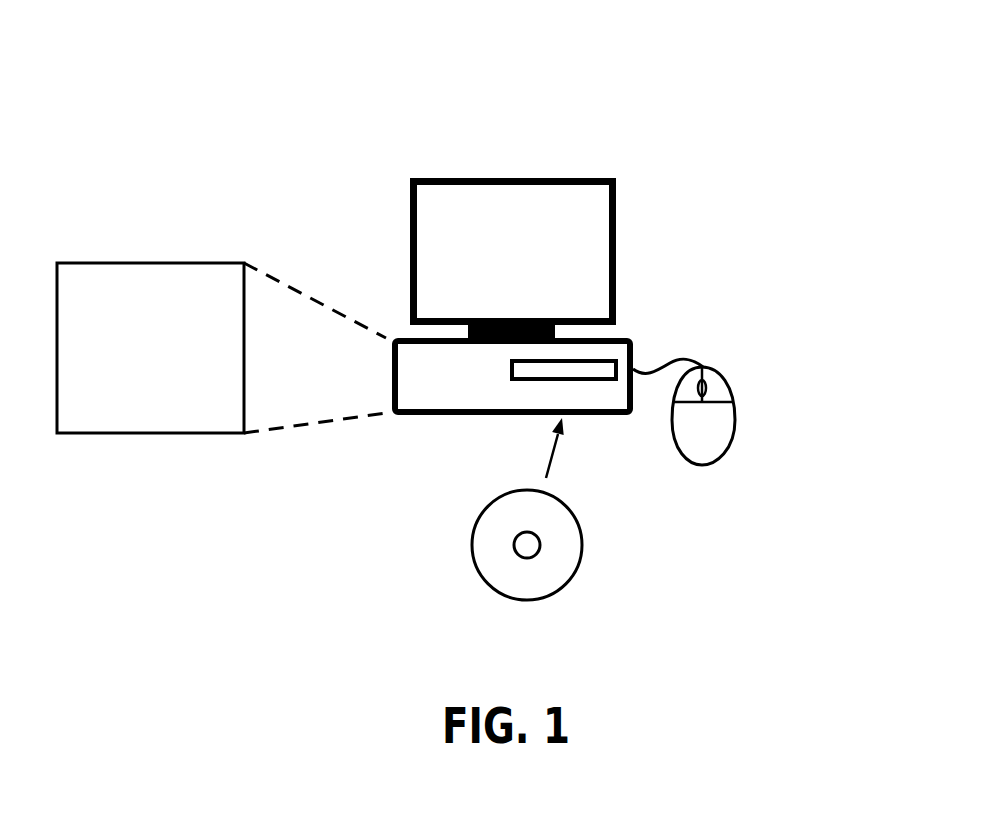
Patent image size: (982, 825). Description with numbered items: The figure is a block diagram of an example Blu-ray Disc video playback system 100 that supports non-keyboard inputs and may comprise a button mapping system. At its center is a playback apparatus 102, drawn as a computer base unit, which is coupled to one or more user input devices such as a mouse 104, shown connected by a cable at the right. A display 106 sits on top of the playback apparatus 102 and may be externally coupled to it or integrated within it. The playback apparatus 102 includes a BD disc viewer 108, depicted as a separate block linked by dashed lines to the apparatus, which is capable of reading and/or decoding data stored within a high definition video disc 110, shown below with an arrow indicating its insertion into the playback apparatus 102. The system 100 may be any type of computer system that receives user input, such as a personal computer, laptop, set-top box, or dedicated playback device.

The BD video playback system 100 is at (712, 91).
The playback apparatus 102 is at (412, 413).
The mouse 104 is at (733, 418).
The display 106 is at (533, 264).
The BD disc viewer 108 is at (130, 374).
The high definition video disc 110 is at (568, 505).